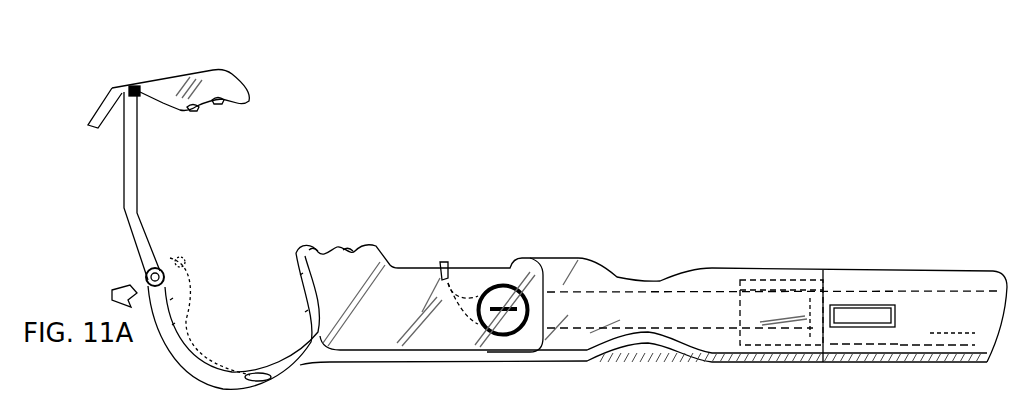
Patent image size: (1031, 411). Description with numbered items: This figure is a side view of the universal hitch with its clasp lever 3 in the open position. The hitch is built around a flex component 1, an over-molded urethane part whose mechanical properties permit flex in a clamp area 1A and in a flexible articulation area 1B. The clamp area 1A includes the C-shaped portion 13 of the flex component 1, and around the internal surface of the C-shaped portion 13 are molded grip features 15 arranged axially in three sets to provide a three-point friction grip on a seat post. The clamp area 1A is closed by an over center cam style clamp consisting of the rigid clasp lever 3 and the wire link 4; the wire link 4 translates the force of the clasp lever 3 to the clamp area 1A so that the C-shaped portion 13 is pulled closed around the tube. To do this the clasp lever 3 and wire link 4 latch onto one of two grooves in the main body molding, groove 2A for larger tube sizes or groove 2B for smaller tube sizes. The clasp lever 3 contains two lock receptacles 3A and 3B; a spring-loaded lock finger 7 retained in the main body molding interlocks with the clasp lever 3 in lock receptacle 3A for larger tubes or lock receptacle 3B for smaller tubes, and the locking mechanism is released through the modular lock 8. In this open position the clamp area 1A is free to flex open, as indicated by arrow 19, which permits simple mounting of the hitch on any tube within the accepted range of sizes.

The flex component 1 is at (747, 164).
The clamp area 1A is at (106, 238).
The flexible articulation area 1B is at (659, 279).
The groove 2A is at (318, 251).
The groove 2B is at (353, 251).
The clasp lever 3 is at (146, 76).
The lock receptacle 3A is at (196, 112).
The lock receptacle 3B is at (224, 104).
The wire link 4 is at (118, 175).
The lock finger 7 is at (441, 256).
The lock 8 is at (495, 282).
The C-shaped portion 13 is at (166, 361).
The grip features 15 is at (299, 284).
The arrow 19 is at (116, 290).